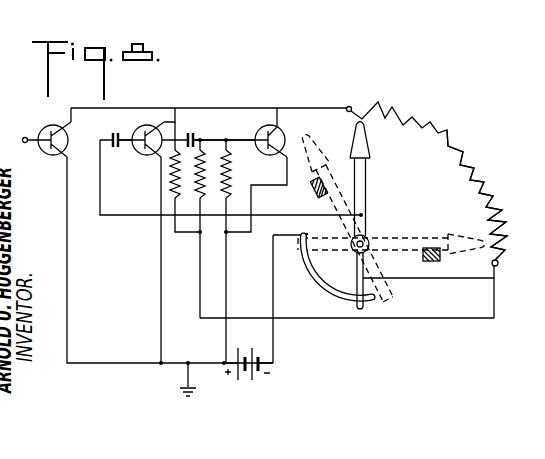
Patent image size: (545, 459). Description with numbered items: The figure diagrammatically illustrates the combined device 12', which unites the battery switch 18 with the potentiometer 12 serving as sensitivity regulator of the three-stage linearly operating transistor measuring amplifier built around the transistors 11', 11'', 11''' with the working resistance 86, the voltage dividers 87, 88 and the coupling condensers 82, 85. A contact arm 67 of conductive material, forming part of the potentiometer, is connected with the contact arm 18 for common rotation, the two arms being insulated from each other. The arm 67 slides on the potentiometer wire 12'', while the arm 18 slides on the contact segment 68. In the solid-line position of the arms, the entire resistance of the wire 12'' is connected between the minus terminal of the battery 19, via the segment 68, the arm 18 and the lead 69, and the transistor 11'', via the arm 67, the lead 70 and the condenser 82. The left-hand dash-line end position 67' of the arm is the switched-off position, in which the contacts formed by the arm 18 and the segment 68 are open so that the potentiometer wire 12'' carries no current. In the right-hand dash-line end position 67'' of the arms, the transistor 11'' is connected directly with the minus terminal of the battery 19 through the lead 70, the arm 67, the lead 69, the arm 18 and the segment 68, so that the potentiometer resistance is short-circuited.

The transistor 11' is at (39, 123).
The transistor 11'' is at (149, 113).
The transistor 11''' is at (248, 110).
The potentiometer 12 is at (429, 181).
The combined device 12' is at (347, 346).
The potentiometer wire 12'' is at (477, 184).
The contact arm 18 is at (360, 309).
The battery 19 is at (247, 383).
The contact arm 67 is at (377, 188).
The left-hand dash-line end position of the arm 67' is at (343, 210).
The right-hand dash-line end position of the arms 67'' is at (391, 227).
The contact segment 68 is at (310, 270).
The lead 69 is at (455, 279).
The lead 70 is at (121, 216).
The coupling condenser 82 is at (111, 136).
The coupling condenser 85 is at (197, 132).
The working resistance 86 is at (173, 182).
The voltage divider 87 is at (204, 155).
The voltage divider 88 is at (231, 171).